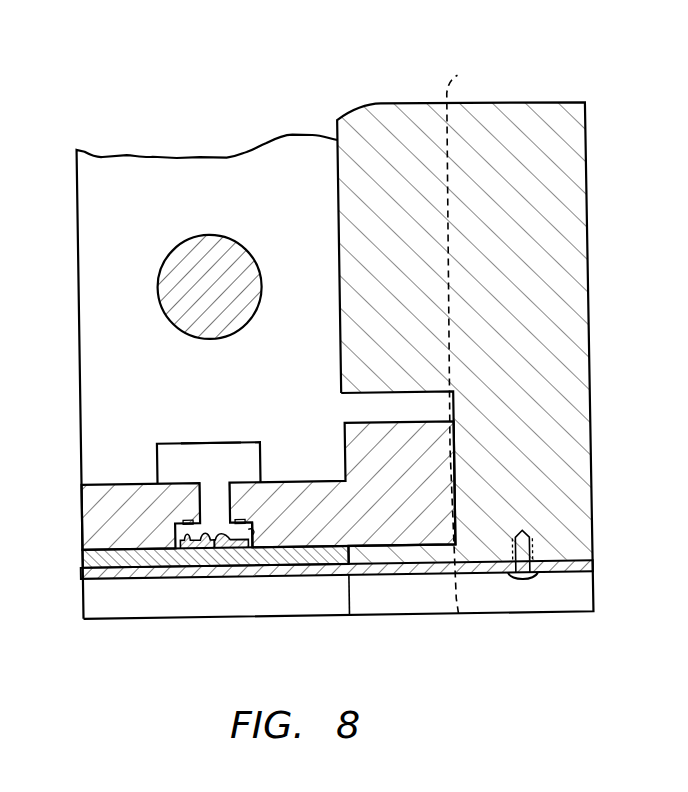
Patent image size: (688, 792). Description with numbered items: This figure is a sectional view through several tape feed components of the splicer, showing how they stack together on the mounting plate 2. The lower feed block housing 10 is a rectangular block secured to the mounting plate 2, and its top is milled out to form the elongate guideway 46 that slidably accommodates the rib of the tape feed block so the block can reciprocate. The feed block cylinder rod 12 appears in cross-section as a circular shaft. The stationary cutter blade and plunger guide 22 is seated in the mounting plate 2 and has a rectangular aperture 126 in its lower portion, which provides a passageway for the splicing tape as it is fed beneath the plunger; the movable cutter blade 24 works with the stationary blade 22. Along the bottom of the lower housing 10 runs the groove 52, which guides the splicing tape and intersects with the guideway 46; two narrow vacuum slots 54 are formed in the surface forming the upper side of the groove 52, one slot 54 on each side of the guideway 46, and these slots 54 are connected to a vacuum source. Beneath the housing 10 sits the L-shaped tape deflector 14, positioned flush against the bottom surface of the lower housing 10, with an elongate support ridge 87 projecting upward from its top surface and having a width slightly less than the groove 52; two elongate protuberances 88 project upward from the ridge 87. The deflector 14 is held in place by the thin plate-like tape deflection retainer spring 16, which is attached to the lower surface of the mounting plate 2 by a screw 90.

The mounting plate 2 is at (535, 108).
The stationary cutter blade and plunger guide 22 is at (271, 221).
The feed block cylinder rod 12 is at (243, 268).
The lower feed block housing 10 is at (403, 431).
The movable cutter blade 24 is at (248, 470).
The rectangular aperture 126 is at (212, 442).
The elongate guideway 46 is at (206, 486).
The vacuum slots 54 is at (186, 518).
The tape deflector 14 is at (83, 553).
The tape deflection retainer spring 16 is at (122, 573).
The elongate support ridge 87 is at (176, 543).
The elongate protuberances 88 is at (213, 531).
The groove 52 is at (248, 528).
The screw 90 is at (525, 585).